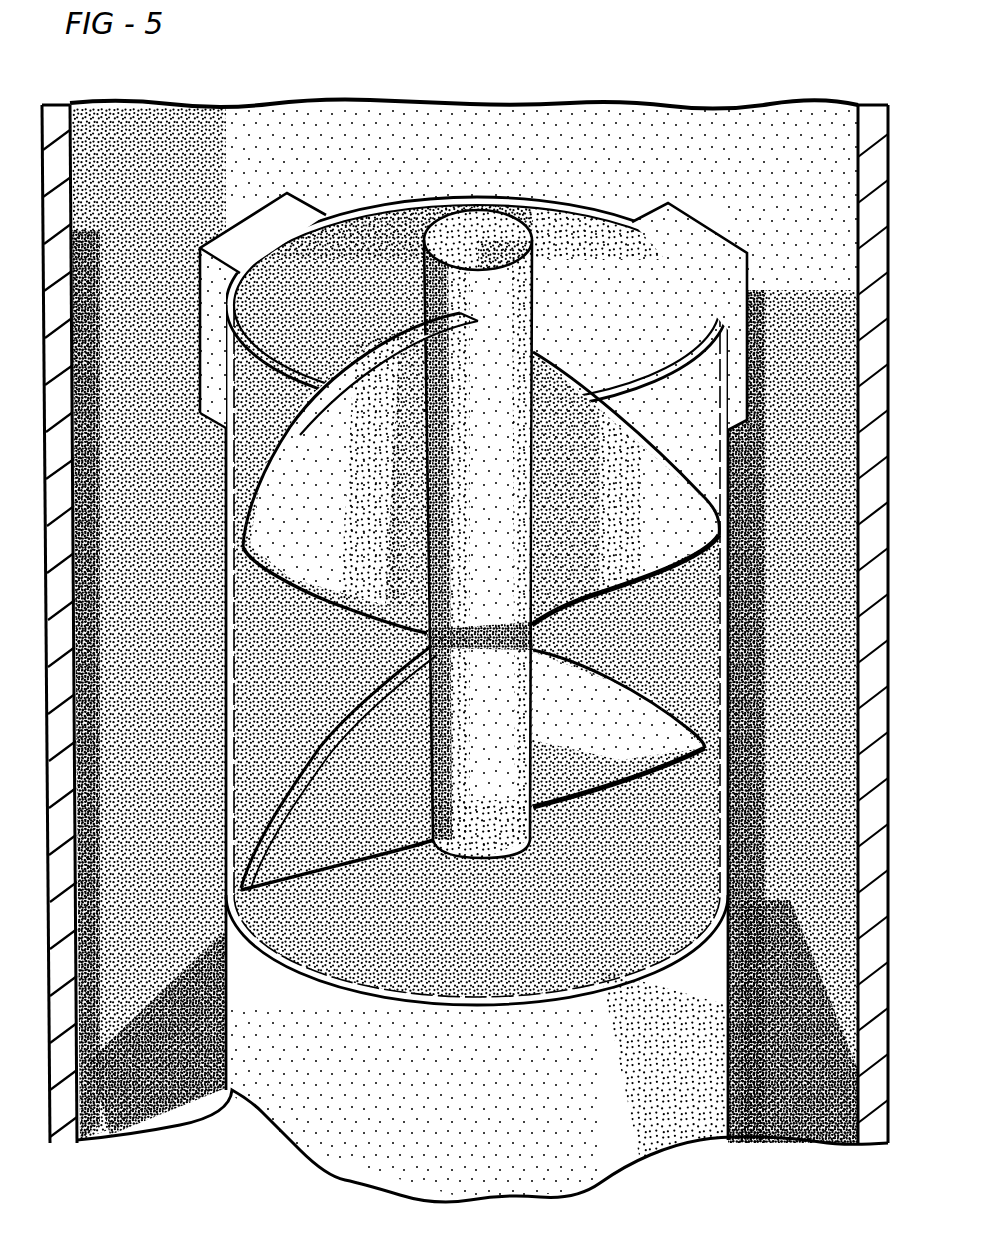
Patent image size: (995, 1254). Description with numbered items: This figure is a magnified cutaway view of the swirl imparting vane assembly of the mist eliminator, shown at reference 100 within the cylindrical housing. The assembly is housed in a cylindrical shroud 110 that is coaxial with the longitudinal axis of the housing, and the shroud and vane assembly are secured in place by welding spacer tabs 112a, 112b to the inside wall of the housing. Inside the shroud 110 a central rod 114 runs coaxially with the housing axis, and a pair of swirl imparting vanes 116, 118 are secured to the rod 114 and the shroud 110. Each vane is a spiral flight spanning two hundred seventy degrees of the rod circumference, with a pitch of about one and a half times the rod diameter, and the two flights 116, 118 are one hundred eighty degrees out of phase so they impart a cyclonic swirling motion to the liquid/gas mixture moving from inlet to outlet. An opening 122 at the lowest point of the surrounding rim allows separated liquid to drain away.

The borehole / well casing wall 100 is at (872, 160).
The cylindrical shroud 110 is at (480, 600).
The spacer tab 112a is at (244, 247).
The spacer tab 112b is at (706, 278).
The central rod 114 is at (506, 463).
The swirl imparting vane 116 is at (347, 536).
The swirl imparting vane 118 is at (626, 484).
The opening 122 is at (465, 655).